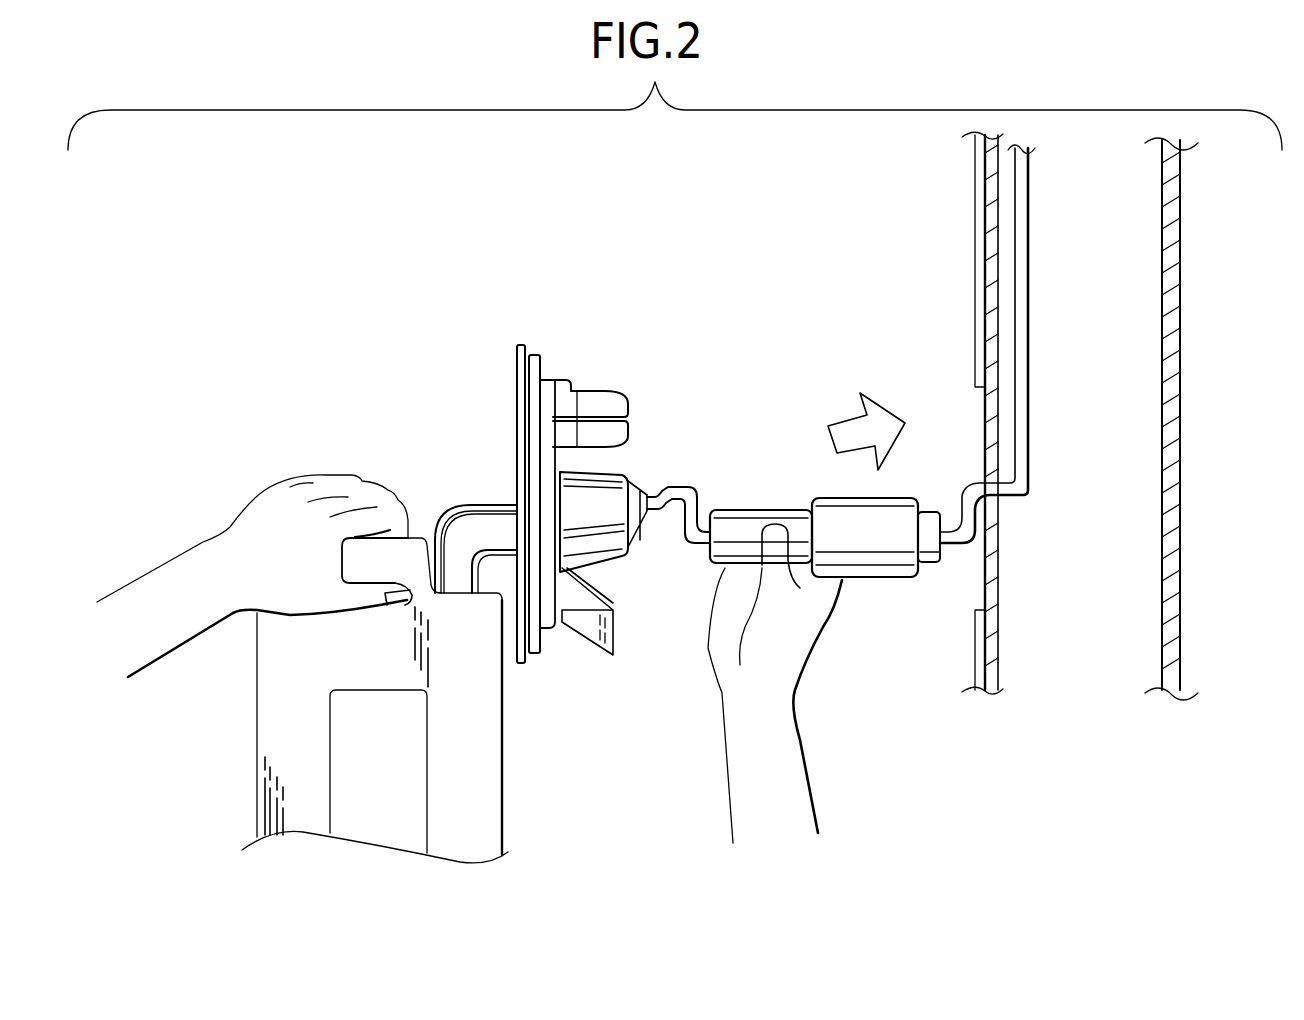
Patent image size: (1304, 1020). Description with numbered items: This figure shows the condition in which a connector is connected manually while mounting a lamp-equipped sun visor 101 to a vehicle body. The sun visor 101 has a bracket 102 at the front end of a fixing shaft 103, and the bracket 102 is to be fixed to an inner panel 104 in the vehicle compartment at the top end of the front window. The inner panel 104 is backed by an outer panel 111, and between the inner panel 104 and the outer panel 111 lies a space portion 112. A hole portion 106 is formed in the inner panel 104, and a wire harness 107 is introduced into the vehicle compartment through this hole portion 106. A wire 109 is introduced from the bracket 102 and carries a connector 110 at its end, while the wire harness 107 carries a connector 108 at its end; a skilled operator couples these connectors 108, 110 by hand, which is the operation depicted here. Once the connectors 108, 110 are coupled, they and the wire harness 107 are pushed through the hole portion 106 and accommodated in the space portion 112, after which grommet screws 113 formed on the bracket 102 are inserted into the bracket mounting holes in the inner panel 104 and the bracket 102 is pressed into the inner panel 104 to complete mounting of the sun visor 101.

The sun visor 101 is at (282, 745).
The bracket 102 is at (517, 358).
The fixing shaft 103 is at (455, 522).
The inner panel 104 is at (998, 635).
The hole portion 106 is at (975, 398).
The wire harness 107 is at (1030, 345).
The connector 108 is at (930, 568).
The wire 109 is at (672, 487).
The connector 110 is at (825, 497).
The outer panel 111 is at (1150, 652).
The space portion 112 is at (1148, 222).
The grommet screws 113 is at (598, 393).